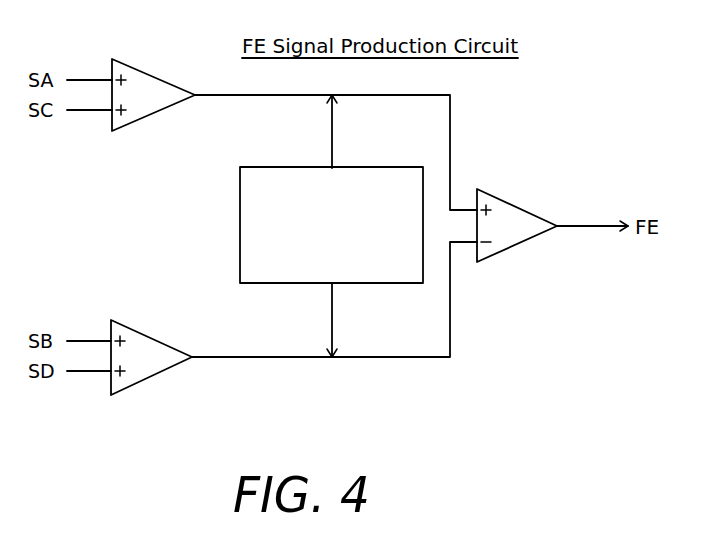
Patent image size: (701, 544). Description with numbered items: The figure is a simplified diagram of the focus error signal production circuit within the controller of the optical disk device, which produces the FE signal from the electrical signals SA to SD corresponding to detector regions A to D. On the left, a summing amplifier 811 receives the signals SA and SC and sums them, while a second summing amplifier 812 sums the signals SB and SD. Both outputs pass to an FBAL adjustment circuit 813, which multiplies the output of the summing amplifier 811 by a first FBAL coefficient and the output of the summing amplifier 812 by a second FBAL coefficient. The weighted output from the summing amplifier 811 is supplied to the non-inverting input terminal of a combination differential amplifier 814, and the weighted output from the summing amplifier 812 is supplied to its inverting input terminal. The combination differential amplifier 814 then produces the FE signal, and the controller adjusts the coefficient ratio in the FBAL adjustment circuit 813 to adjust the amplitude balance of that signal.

The summing amplifier 811 is at (153, 76).
The summing amplifier 812 is at (153, 338).
The FBAL adjustment circuit 813 is at (376, 167).
The combination differential amplifier 814 is at (519, 208).